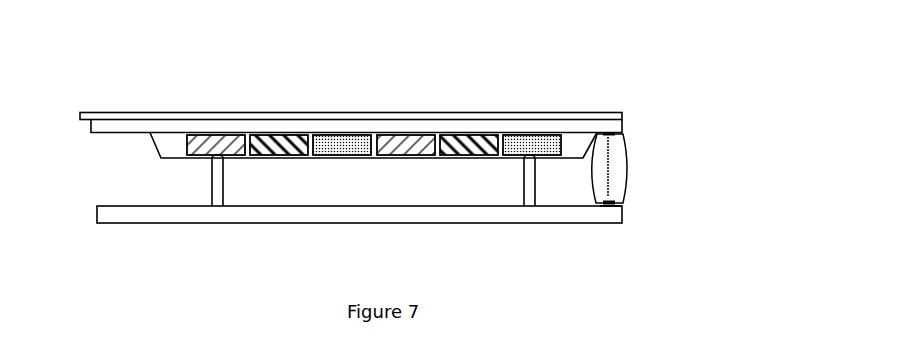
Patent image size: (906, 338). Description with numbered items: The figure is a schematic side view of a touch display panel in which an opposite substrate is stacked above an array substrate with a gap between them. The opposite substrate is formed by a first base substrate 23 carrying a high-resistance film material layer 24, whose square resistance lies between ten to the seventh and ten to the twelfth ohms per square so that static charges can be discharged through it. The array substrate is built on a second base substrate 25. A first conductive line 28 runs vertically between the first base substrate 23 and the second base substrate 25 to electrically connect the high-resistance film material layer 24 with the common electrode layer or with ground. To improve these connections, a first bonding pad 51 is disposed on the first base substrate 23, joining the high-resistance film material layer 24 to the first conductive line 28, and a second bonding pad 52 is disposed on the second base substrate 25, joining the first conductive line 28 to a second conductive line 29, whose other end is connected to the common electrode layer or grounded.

The first base substrate 23 is at (351, 75).
The high-resistance film material layer 24 is at (361, 87).
The second base substrate 25 is at (359, 238).
The first conductive line 28 is at (631, 168).
The second conductive line 29 is at (630, 215).
The first bonding pad 51 is at (636, 130).
The second bonding pad 52 is at (636, 189).